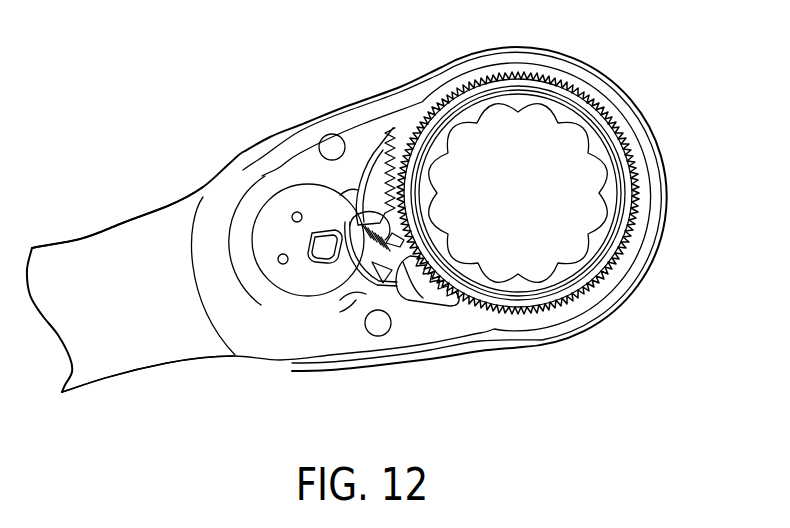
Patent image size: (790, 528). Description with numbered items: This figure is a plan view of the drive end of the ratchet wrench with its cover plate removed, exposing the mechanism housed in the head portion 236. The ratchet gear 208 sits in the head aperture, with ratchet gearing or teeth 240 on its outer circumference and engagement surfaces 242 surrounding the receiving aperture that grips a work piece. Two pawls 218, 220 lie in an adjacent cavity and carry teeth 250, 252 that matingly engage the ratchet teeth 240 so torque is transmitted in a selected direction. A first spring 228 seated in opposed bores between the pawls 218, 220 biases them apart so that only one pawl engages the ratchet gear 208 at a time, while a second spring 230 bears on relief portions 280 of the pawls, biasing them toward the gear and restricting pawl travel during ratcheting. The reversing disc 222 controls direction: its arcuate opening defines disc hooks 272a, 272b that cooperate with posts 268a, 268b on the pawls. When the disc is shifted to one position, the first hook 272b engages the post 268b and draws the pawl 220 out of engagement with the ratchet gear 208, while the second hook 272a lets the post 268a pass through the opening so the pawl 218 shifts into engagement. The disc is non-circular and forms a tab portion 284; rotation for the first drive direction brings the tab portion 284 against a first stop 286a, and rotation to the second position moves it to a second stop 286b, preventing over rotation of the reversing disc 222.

The ratchet gear 208 is at (613, 250).
The pawl 218 is at (450, 285).
The pawl 220 is at (388, 140).
The reversing disc 222 is at (293, 300).
The first spring 228 is at (403, 237).
The second spring 230 is at (358, 300).
The head portion 236 is at (667, 157).
The ratchet gearing or teeth 240 is at (597, 103).
The engagement surfaces 242 is at (605, 205).
The teeth 250 is at (437, 287).
The teeth 252 is at (402, 168).
The post 268a is at (372, 260).
The post 268b is at (362, 217).
The disc hook 272a is at (350, 303).
The disc hook 272b is at (345, 195).
The relief portions 280 is at (387, 293).
The tab portion 284 is at (256, 244).
The first stop 286a is at (253, 240).
The second stop 286b is at (265, 303).